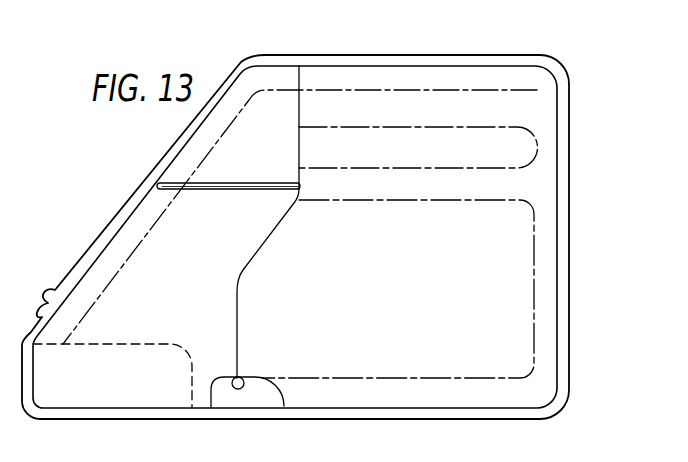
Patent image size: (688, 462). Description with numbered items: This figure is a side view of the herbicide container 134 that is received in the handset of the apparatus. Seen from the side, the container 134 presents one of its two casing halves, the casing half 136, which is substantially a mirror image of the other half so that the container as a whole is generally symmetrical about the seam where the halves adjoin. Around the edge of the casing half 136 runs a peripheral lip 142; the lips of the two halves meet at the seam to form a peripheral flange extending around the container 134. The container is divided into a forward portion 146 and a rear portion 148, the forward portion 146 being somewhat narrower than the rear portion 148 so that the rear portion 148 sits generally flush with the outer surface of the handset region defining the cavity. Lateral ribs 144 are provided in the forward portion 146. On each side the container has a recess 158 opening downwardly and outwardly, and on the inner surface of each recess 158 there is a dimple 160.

The container 134 is at (441, 49).
The casing half 136 is at (416, 283).
The peripheral lip 142 is at (568, 281).
The lateral rib 144 is at (263, 182).
The forward portion 146 is at (147, 267).
The rear portion 148 is at (505, 213).
The recess 158 is at (262, 395).
The dimple 160 is at (240, 378).